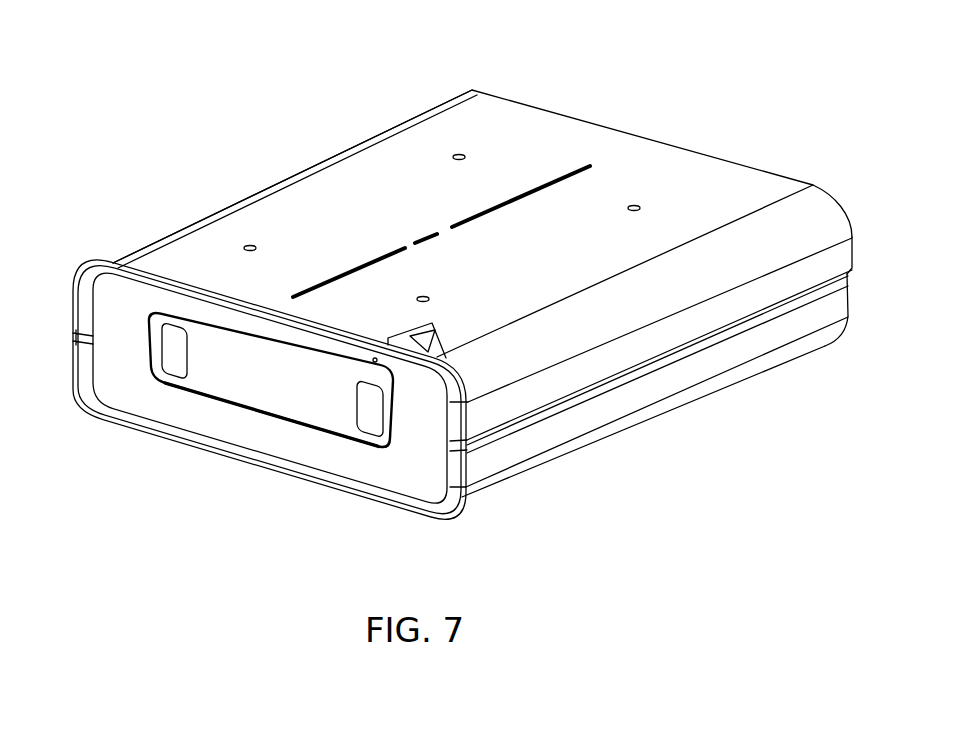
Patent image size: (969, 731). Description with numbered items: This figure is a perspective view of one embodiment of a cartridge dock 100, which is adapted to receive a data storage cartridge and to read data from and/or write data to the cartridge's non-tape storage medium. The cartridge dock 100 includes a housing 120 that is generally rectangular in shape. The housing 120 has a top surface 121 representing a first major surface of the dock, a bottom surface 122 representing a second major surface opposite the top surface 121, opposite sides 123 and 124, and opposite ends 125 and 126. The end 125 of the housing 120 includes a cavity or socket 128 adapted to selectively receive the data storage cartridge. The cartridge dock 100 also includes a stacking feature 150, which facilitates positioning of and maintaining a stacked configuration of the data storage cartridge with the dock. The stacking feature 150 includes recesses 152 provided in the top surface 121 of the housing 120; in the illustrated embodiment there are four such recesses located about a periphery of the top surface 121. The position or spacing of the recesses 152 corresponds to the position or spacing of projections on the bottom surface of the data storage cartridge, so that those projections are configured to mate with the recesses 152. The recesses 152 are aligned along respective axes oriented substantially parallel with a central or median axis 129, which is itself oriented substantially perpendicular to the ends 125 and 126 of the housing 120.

The cartridge dock 100 is at (272, 42).
The housing 120 is at (314, 157).
The top surface 121 is at (600, 142).
The bottom surface 122 is at (333, 490).
The side 123 is at (62, 348).
The side 124 is at (656, 382).
The end 125 is at (150, 403).
The end 126 is at (858, 247).
The socket 128 is at (258, 393).
The median axis 129 is at (441, 231).
The stacking feature 150 is at (236, 182).
The recesses 152 is at (250, 245).